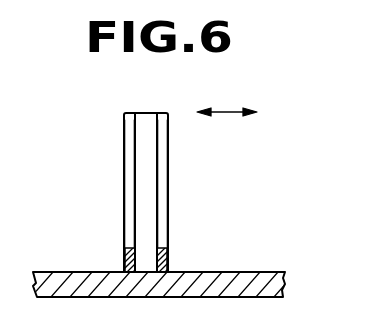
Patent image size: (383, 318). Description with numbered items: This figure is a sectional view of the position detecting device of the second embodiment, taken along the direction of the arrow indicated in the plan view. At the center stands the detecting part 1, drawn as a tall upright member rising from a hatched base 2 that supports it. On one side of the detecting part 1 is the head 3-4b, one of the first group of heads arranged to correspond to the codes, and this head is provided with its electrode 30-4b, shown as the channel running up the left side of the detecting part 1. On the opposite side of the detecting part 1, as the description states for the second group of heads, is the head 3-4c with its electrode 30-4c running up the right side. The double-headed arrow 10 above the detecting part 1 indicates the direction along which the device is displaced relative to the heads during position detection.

The detecting part 1 is at (152, 174).
The substrate 2 is at (275, 272).
The direction of displacement 10 is at (228, 110).
The electrode 30-4b is at (130, 208).
The electrode 30-4c is at (163, 207).
The head 3-4b is at (125, 262).
The head 3-4c is at (167, 257).